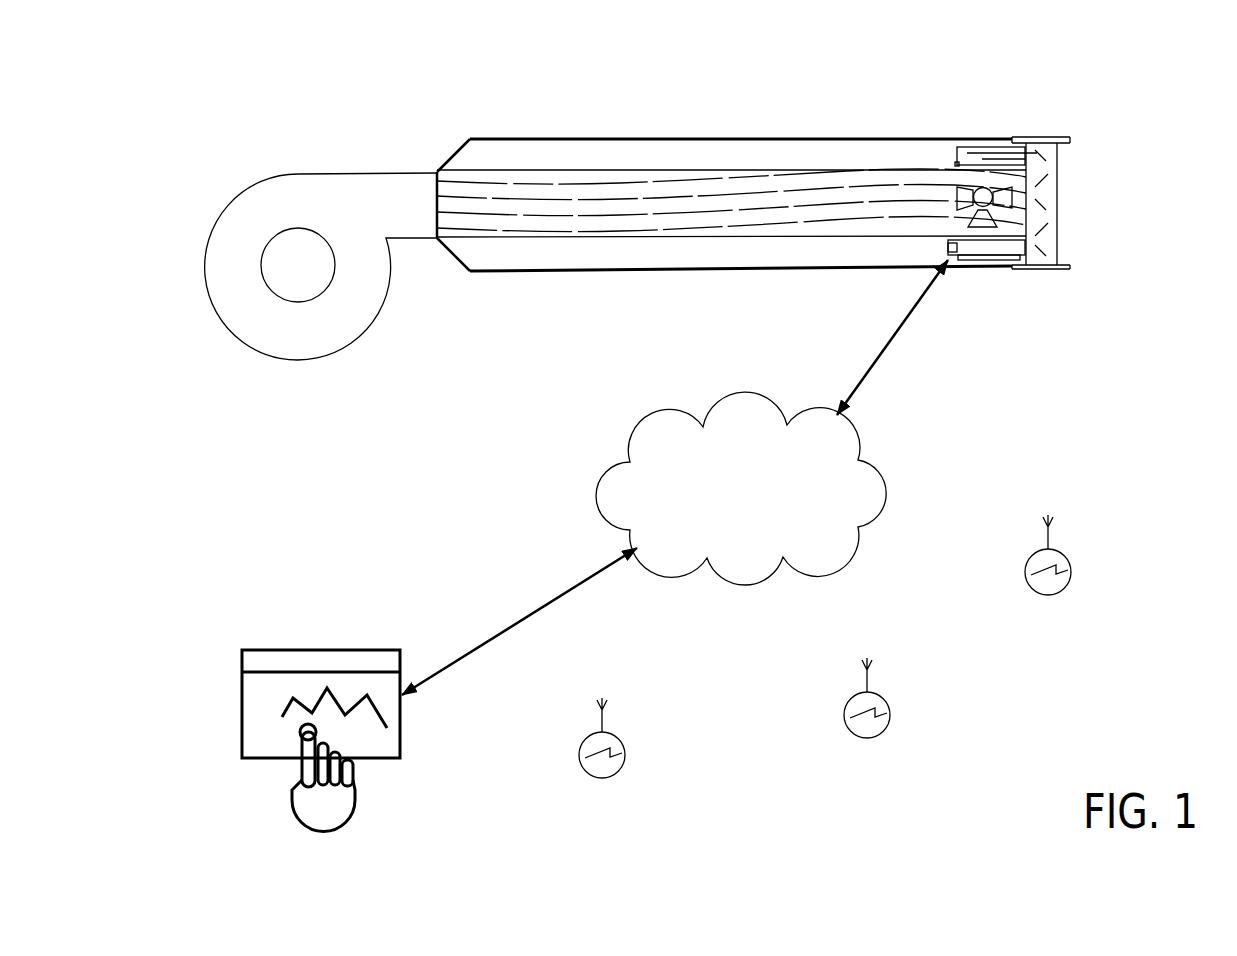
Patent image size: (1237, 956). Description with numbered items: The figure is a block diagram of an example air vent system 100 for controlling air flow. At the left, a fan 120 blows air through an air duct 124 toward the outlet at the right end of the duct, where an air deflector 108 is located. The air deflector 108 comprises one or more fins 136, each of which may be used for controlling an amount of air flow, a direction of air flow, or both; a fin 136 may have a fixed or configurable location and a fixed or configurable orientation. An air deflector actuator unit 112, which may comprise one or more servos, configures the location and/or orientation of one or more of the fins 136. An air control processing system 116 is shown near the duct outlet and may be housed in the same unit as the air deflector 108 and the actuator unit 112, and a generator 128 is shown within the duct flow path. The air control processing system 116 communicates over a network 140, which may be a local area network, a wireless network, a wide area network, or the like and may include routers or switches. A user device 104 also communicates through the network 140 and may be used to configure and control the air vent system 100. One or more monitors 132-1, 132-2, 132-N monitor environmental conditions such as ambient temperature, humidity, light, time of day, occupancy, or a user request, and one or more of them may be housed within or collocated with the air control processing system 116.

The air vent system 100 is at (814, 189).
The user device 104 is at (392, 772).
The air deflector 108 is at (1057, 228).
The air deflector actuator unit 112 is at (952, 143).
The air control processing system 116 is at (985, 265).
The fan 120 is at (305, 163).
The air duct 124 is at (535, 130).
The generator 128 is at (952, 183).
The monitor 132-1 is at (618, 692).
The monitor 132-2 is at (883, 655).
The monitor 132-N is at (1053, 505).
The fin 136 is at (1047, 202).
The network 140 is at (748, 380).